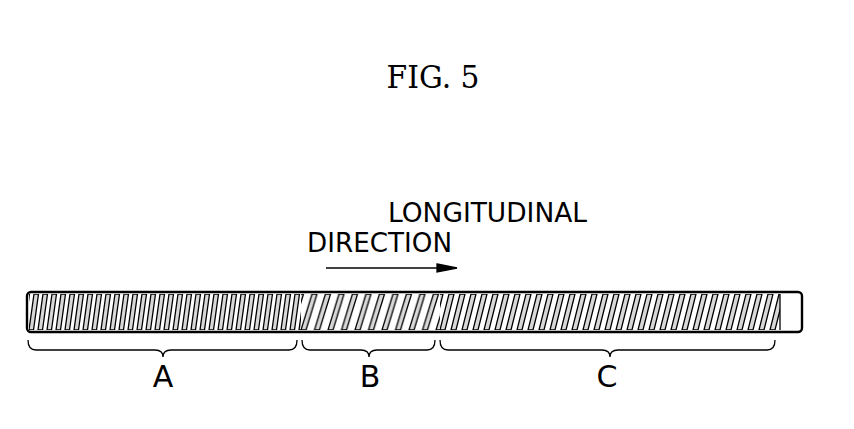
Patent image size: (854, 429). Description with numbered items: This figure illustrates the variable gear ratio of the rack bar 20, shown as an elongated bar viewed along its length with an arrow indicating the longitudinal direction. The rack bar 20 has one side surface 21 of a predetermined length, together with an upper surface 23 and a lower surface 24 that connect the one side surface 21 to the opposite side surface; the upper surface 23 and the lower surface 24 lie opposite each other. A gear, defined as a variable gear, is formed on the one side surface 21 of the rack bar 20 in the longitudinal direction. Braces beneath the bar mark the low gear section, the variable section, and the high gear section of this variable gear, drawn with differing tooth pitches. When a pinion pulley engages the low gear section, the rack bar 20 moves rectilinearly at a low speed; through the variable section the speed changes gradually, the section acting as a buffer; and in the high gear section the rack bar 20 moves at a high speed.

The rack bar 20 is at (62, 224).
The one side surface 21 is at (793, 310).
The upper surface 23 is at (676, 292).
The lower surface 24 is at (793, 334).